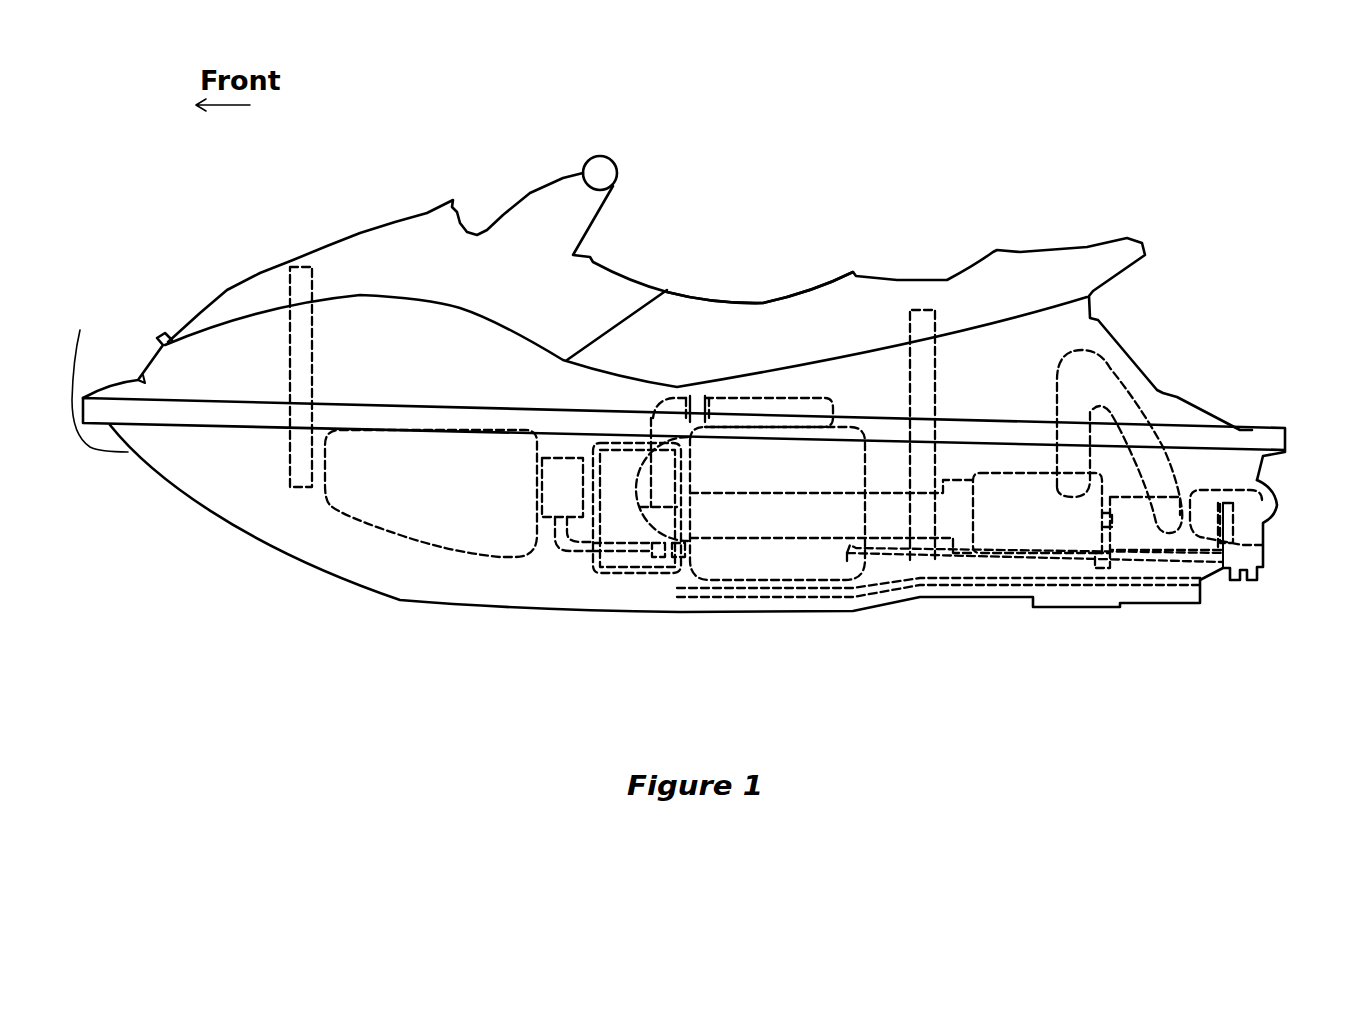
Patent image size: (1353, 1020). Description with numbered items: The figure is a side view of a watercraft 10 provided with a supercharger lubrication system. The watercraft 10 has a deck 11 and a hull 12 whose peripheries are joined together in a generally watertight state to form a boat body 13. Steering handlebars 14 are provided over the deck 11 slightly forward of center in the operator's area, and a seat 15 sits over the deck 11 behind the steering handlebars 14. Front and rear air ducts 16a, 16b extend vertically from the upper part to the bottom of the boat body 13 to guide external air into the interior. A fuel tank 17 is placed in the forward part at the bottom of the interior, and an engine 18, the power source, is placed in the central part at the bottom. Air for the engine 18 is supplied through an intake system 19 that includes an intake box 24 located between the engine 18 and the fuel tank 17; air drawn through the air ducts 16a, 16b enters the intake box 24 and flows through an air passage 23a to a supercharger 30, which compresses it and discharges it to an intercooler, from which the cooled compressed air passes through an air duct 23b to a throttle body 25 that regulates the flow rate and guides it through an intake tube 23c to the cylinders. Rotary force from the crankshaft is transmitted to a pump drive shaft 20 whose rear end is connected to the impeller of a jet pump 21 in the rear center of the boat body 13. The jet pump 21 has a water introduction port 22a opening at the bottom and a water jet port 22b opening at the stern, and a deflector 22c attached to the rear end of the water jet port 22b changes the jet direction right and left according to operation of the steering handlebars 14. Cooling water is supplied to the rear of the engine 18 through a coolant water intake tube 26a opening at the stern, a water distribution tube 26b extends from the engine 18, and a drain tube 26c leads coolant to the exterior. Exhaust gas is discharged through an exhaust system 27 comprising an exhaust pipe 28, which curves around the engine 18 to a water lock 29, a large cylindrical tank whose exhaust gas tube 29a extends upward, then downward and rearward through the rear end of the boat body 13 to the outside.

The watercraft 10 is at (937, 141).
The deck 11 is at (138, 380).
The hull 12 is at (95, 377).
The boat body 13 is at (148, 306).
The steering handlebars 14 is at (613, 175).
The seat 15 is at (712, 307).
The air duct 16a is at (313, 272).
The air duct 16b is at (937, 365).
The fuel tank 17 is at (433, 545).
The engine 18 is at (717, 582).
The intake system 19 is at (636, 404).
The pump drive shaft 20 is at (1103, 500).
The jet pump 21 is at (1173, 540).
The water introduction port 22a is at (1105, 567).
The water jet port 22b is at (1205, 525).
The deflector 22c is at (1270, 532).
The air passage 23a is at (567, 548).
The air duct 23b is at (663, 403).
The intake tube 23c is at (790, 397).
The intake box 24 is at (548, 520).
The throttle body 25 is at (693, 403).
The coolant water intake tube 26a is at (997, 565).
The water distribution tube 26b is at (593, 560).
The drain tube 26c is at (953, 590).
The exhaust system 27 is at (885, 552).
The exhaust pipe 28 is at (813, 542).
The water lock 29 is at (1045, 542).
The exhaust gas tube 29a is at (1107, 380).
The supercharger 30 is at (650, 573).